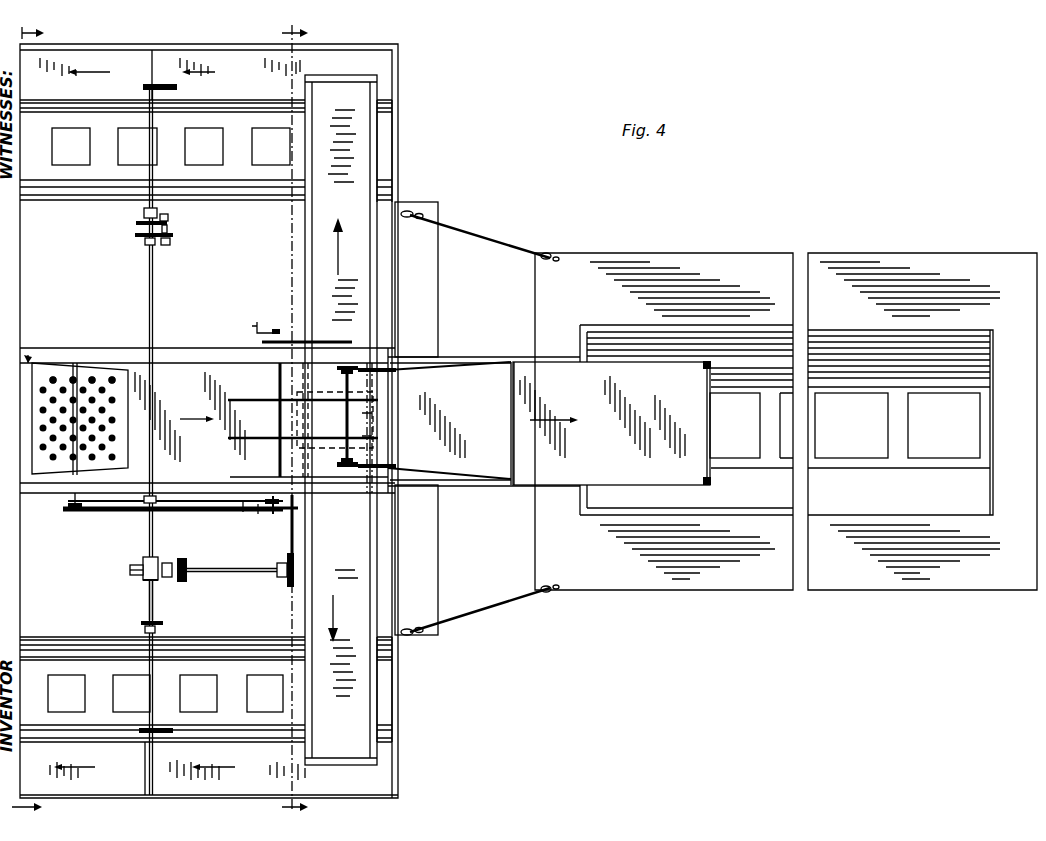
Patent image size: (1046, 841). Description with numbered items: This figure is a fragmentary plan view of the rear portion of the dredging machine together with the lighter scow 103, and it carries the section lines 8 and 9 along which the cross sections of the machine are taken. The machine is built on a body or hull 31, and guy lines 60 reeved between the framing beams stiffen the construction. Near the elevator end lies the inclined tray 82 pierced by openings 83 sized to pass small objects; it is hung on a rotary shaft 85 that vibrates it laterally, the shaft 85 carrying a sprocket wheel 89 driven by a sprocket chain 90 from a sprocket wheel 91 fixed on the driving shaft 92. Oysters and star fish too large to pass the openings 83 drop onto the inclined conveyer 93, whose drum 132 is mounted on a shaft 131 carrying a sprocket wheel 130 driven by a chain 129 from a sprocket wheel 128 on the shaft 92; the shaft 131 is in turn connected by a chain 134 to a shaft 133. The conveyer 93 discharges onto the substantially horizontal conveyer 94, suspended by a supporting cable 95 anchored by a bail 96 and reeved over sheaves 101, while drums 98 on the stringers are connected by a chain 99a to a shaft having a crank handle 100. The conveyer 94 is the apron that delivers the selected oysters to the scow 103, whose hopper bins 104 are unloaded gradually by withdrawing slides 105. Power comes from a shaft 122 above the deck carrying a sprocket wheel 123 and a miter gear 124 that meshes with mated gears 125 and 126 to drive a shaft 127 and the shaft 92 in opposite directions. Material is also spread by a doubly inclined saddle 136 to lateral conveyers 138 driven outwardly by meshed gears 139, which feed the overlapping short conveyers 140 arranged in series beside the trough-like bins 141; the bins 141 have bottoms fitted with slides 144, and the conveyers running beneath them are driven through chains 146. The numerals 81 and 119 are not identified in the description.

The section line 8— 8 is at (285, 421).
The section line 9— 9 is at (34, 421).
The body or hull 31 is at (432, 300).
The guy lines 60 is at (321, 440).
The plate lever 81 is at (42, 346).
The tray 82 is at (75, 370).
The openings or perforations 83 is at (44, 426).
The rotary shaft 85 is at (70, 513).
The sprocket wheel 89 is at (66, 507).
The sprocket chain 90 is at (99, 513).
The sprocket wheel 91 is at (159, 505).
The driving shaft 92 is at (154, 320).
The conveyer 93 is at (196, 368).
The conveyer 94 is at (631, 471).
The supporting cable 95 is at (484, 372).
The bail 96 is at (508, 362).
The drums 98 is at (339, 373).
The chain 99a is at (318, 340).
The crank handle 100 is at (253, 326).
The sheaves 101 is at (386, 374).
The lighter scow 103 is at (642, 591).
The bins 104 is at (976, 498).
The slides 105 is at (940, 451).
The vertical shaft 119 is at (290, 553).
The shaft 122 is at (209, 570).
The sprocket wheel 123 is at (186, 566).
The miter gear 124 is at (141, 577).
The mated gear 125 is at (160, 568).
The mated gear 126 is at (158, 584).
The shaft 127 is at (154, 600).
The sprocket wheel 128 is at (148, 512).
The chain 129 is at (242, 513).
The sprocket wheel 130 is at (271, 513).
The shaft 131 is at (264, 500).
The drum 132 is at (278, 386).
The shaft 133 is at (257, 515).
The chain 134 is at (300, 508).
The doubly inclined saddle 136 is at (366, 414).
The laterally extended conveyers 138 is at (314, 219).
The meshed gears 139 is at (300, 427).
The short conveyers 140 is at (218, 52).
The trough-like bins 141 is at (386, 148).
The slides 144 is at (123, 150).
The chains 146 is at (158, 94).